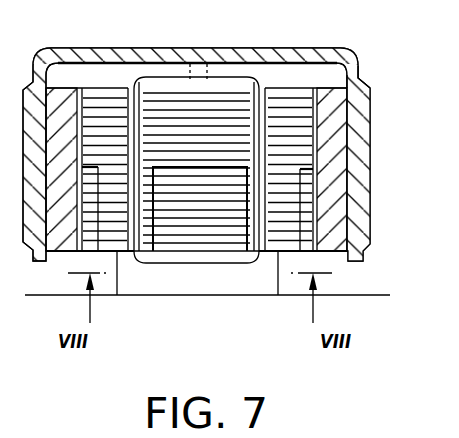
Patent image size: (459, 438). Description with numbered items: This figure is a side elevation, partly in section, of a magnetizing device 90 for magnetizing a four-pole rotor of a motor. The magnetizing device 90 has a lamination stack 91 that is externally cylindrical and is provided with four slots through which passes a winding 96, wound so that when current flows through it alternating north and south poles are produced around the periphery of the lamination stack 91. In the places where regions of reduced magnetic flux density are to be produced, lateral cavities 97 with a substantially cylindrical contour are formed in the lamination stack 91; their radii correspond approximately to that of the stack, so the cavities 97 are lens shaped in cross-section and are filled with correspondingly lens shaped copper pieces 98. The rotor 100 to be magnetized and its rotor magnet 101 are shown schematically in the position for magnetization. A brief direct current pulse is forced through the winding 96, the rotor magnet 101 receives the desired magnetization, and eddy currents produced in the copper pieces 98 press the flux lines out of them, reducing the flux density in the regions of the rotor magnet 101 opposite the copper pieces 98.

The magnetizing device 90 is at (293, 80).
The lamination stack 91 is at (203, 128).
The winding 96 is at (215, 79).
The lateral cavities 97 is at (233, 228).
The copper pieces 98 is at (91, 176).
The rotor 100 is at (352, 79).
The rotor magnet 101 is at (335, 162).